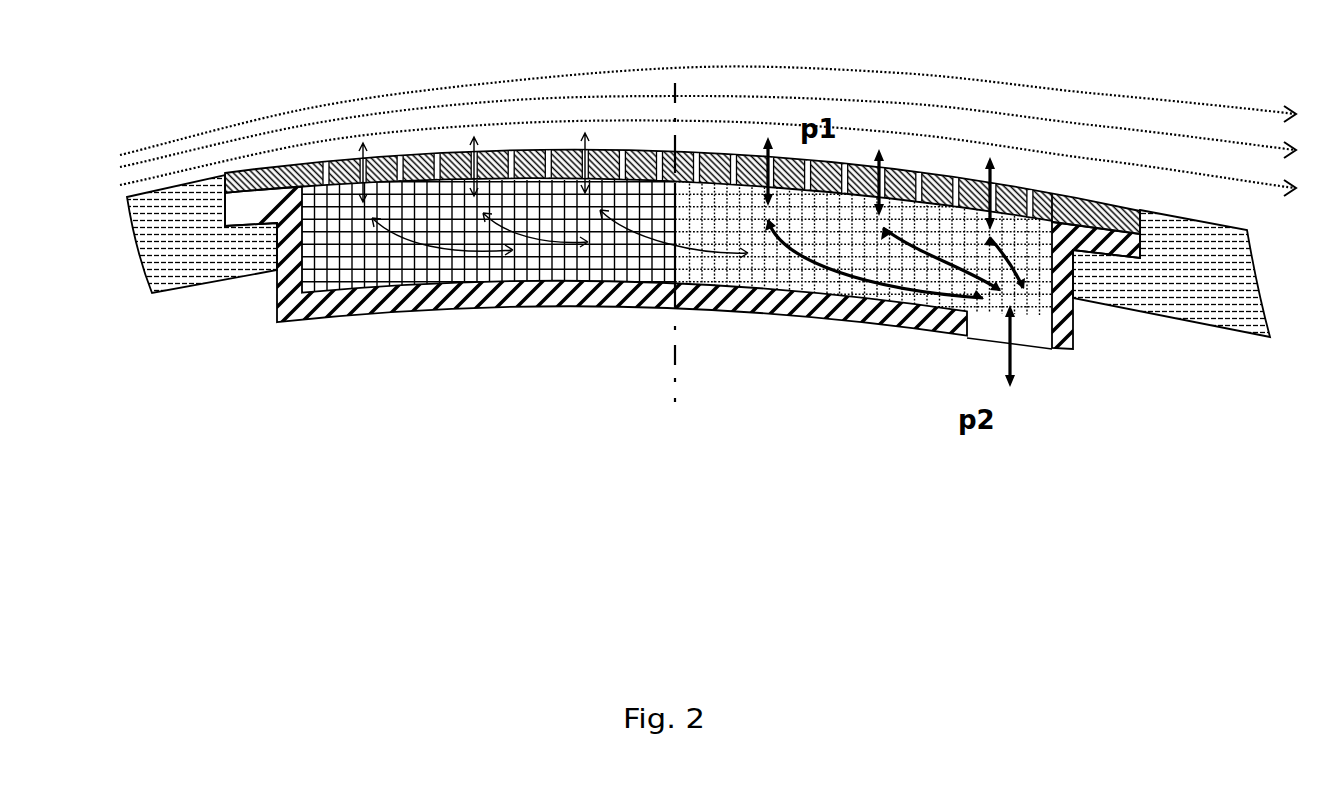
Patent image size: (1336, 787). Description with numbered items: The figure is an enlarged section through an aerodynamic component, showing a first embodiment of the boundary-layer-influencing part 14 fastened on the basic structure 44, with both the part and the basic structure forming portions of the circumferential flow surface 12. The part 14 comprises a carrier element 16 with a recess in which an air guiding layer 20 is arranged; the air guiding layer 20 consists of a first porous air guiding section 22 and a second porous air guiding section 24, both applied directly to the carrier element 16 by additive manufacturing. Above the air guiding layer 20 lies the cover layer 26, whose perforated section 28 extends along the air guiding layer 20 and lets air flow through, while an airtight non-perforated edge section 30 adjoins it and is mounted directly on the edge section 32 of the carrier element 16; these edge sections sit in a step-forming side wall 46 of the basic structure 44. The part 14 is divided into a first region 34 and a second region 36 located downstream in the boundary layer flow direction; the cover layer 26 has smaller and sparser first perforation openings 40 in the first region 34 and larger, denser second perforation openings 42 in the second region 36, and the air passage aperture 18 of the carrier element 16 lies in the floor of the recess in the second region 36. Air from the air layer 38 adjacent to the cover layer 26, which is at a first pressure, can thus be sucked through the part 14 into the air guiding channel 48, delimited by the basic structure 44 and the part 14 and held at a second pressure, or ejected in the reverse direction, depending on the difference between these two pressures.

The flow surface 12 is at (183, 177).
The boundary-layer-influencing part 14 is at (243, 322).
The carrier element 16 is at (297, 322).
The air passage aperture 18 is at (965, 342).
The air guiding layer 20 is at (597, 443).
The first porous air guiding section 22 is at (595, 263).
The second porous air guiding section 24 is at (757, 270).
The cover layer 26 is at (244, 160).
The perforated section 28 is at (460, 158).
The non-perforated edge section 30 is at (1073, 195).
The edge section 32 is at (1110, 245).
The first region 34 is at (505, 110).
The second region 36 is at (758, 100).
The air layer 38 is at (118, 143).
The first perforation openings 40 is at (548, 145).
The second perforation openings 42 is at (840, 156).
The basic structure 44 is at (1193, 328).
The side wall 46 is at (1108, 262).
The air guiding channel 48 is at (1052, 453).